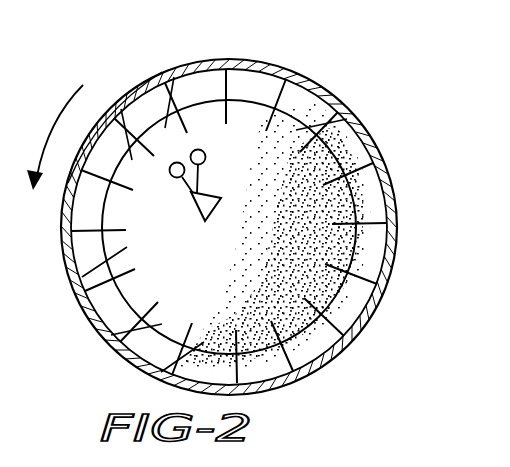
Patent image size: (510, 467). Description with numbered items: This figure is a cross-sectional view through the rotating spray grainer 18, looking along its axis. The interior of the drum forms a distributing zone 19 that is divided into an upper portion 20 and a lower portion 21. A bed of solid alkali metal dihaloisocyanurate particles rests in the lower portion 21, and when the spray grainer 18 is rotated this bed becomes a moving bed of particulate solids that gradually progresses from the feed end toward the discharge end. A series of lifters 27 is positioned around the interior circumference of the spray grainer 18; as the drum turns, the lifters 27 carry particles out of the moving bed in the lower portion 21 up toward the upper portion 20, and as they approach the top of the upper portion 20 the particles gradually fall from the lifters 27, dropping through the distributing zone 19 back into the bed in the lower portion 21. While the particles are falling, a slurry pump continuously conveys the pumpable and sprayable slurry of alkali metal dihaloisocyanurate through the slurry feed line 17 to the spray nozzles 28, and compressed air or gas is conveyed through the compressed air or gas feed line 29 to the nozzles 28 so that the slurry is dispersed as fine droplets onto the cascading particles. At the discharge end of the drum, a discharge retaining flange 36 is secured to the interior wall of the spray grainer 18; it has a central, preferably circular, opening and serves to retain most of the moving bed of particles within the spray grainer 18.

The slurry feed line 17 is at (170, 170).
The spray grainer 18 is at (270, 60).
The distributing zone 19 is at (82, 277).
The upper portion 20 is at (170, 127).
The lower portion 21 is at (138, 82).
The lifters 27 is at (367, 173).
The spray nozzles 28 is at (199, 221).
The compressed air or gas feed line 29 is at (205, 151).
The discharge retaining flange 36 is at (310, 102).